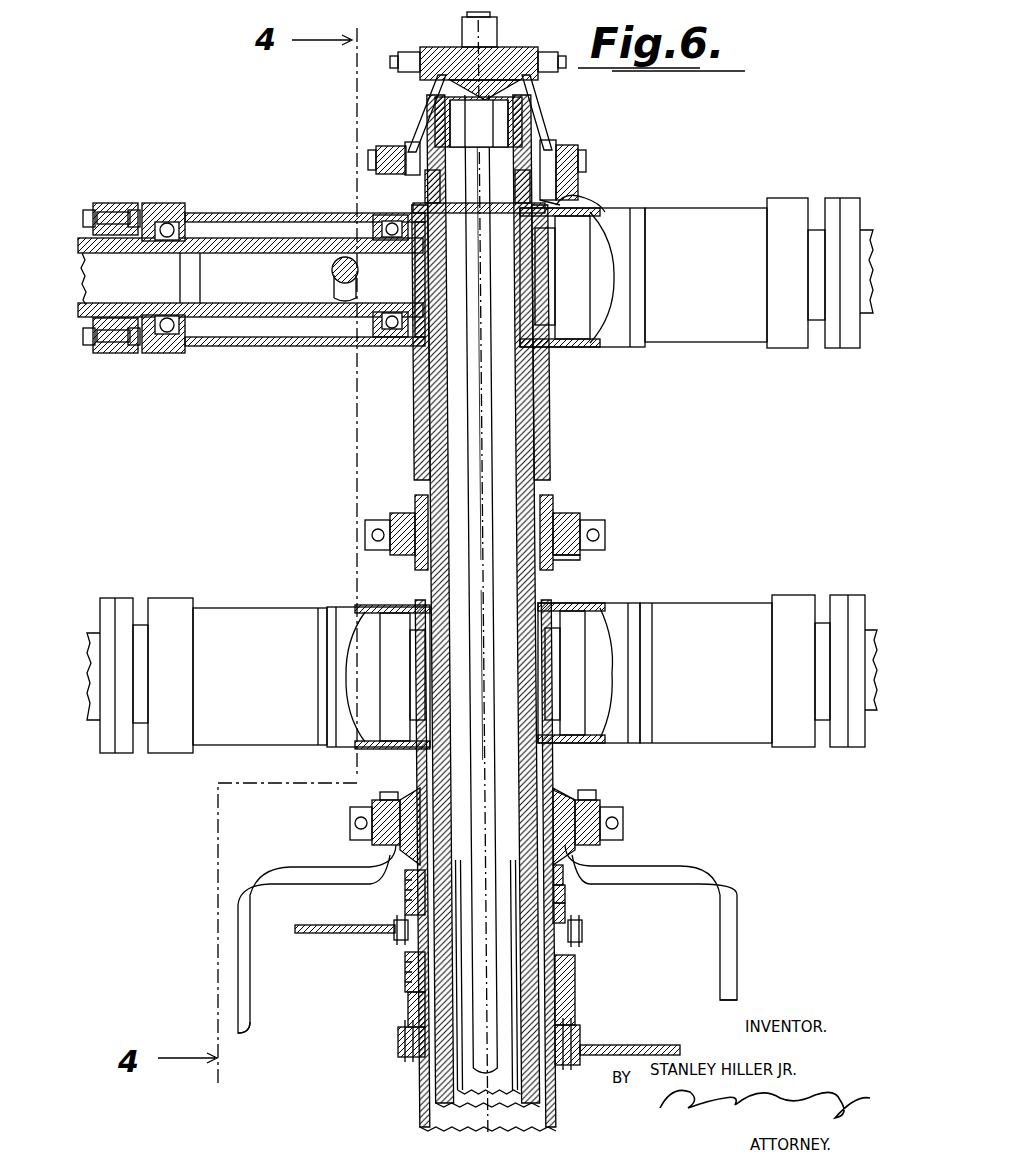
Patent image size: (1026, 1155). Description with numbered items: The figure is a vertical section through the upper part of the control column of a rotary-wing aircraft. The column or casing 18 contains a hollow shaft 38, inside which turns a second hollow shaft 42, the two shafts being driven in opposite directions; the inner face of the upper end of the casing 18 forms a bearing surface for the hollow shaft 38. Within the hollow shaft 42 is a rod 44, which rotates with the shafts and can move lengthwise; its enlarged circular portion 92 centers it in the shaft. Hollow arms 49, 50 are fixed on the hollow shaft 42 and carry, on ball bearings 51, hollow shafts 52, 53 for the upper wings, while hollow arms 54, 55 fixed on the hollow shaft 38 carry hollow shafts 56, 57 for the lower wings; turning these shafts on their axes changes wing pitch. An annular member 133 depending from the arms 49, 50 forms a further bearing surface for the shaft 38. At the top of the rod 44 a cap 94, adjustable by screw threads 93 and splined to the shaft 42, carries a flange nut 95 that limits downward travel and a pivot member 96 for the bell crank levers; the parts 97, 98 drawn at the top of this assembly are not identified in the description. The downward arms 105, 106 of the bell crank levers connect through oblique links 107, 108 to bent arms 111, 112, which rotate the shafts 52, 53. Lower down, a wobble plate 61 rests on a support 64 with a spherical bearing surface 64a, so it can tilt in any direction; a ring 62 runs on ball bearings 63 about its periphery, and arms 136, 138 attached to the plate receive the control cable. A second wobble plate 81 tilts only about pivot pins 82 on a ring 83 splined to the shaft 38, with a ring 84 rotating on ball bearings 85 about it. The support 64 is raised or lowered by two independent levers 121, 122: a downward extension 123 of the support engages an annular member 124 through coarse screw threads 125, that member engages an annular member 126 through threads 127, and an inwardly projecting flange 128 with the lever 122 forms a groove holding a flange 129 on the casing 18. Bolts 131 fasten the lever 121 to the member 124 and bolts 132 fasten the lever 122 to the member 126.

The column or casing 18 is at (462, 865).
The hollow shaft 38 is at (452, 607).
The hollow shaft 42 is at (551, 599).
The rod 44 is at (522, 997).
The hollow arm 49 is at (258, 347).
The hollow arm 50 is at (680, 332).
The ball bearings 51 is at (195, 345).
The hollow shaft 52 is at (222, 317).
The hollow shaft 53 is at (600, 298).
The hollow arm 54 is at (276, 680).
The hollow arm 55 is at (715, 680).
The hollow shaft 56 is at (370, 680).
The hollow shaft 57 is at (578, 677).
The wobble plate 61 is at (405, 800).
The ring 62 is at (375, 812).
The ball bearings 63 is at (350, 823).
The support 64 is at (558, 795).
The spherical bearing surface 64a is at (562, 792).
The wobble plate 81 is at (575, 552).
The pivot pins 82 is at (402, 512).
The ring 83 is at (560, 510).
The ring 84 is at (372, 520).
The ball bearings 85 is at (606, 530).
The enlarged circular portion 92 is at (430, 258).
The screw threads 93 is at (515, 135).
The cap 94 is at (428, 185).
The flange nut 95 is at (445, 120).
The pivot member 96 is at (398, 62).
The cross bar 97 is at (430, 48).
The bolt 98 is at (537, 50).
The arm 105 is at (422, 128).
The arm 106 is at (552, 125).
The oblique link 107 is at (402, 152).
The oblique link 108 is at (570, 182).
The bent arm 111 is at (330, 272).
The bent arm 112 is at (585, 198).
The lever 121 is at (320, 933).
The lever 122 is at (650, 1045).
The downward extension 123 is at (563, 880).
The annular member 124 is at (565, 893).
The screw threads 125 is at (565, 912).
The annular member 126 is at (405, 975).
The screw threads 127 is at (405, 995).
The inwardly projecting flange 128 is at (405, 1015).
The flange 129 is at (580, 1035).
The bolts 131 is at (395, 945).
The bolts 132 is at (398, 1045).
The annular member 133 is at (514, 342).
The arm 136 is at (250, 920).
The arm 138 is at (737, 908).